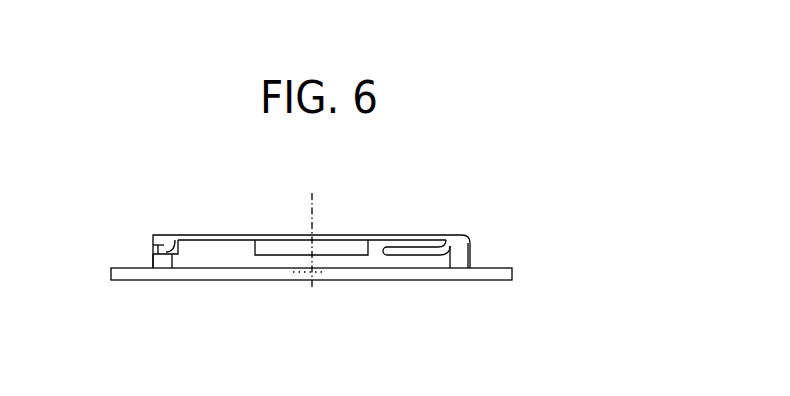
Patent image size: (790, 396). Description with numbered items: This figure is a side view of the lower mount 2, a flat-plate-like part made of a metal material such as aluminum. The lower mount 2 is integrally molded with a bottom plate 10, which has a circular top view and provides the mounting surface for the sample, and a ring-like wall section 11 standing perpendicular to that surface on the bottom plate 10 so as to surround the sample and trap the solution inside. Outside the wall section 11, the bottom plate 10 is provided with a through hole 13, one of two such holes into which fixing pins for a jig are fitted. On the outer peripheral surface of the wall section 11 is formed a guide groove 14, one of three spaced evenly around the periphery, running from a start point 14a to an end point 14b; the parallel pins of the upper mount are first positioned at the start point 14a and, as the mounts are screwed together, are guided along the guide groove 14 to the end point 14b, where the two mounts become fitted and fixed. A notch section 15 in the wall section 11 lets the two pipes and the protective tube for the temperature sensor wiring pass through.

The lower mount 2 is at (507, 213).
The bottom plate 10 is at (490, 273).
The wall section 11 is at (232, 237).
The through hole 13 is at (297, 272).
The guide groove 14 is at (171, 268).
The start point of the guide groove 14a is at (173, 238).
The end point of the guide groove 14b is at (395, 257).
The notch section 15 is at (277, 236).